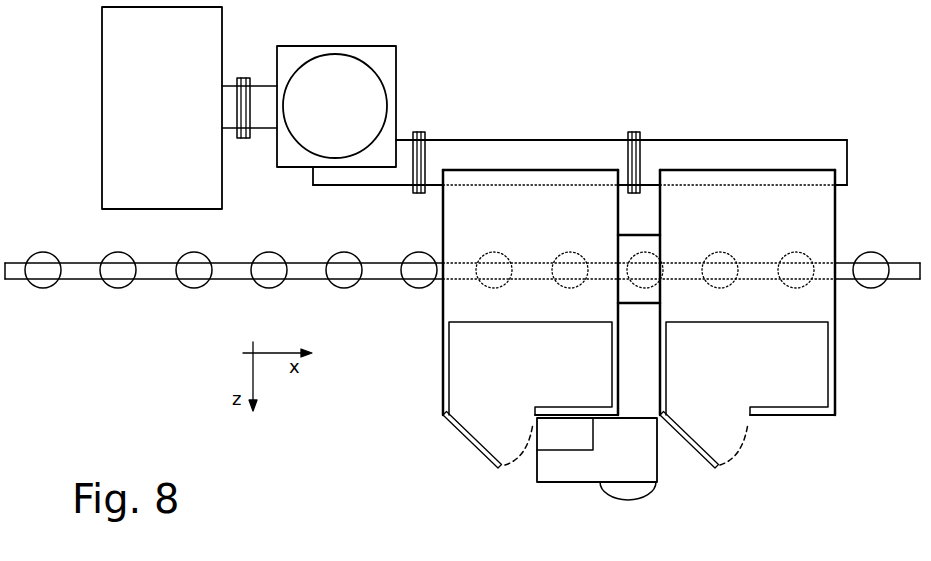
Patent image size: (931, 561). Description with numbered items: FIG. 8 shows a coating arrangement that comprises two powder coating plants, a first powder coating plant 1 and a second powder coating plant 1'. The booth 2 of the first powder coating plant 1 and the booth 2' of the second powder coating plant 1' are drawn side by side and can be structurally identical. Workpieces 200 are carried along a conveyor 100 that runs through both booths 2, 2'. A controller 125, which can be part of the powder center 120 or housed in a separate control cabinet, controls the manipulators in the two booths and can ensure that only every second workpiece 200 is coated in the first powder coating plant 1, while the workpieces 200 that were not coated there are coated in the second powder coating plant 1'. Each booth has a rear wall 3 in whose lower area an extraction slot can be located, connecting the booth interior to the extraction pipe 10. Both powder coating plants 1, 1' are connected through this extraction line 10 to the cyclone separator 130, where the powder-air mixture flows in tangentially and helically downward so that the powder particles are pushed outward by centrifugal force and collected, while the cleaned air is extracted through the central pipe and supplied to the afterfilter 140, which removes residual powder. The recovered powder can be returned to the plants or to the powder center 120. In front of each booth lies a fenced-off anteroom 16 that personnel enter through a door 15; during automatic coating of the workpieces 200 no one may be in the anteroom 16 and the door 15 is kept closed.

The first powder coating plant 1 is at (502, 292).
The second powder coating plant 1' is at (762, 292).
The booth 2 is at (530, 302).
The booth 2' is at (747, 302).
The rear wall 3 is at (543, 170).
The extraction pipe 10 is at (603, 140).
The door 15 is at (482, 458).
The anteroom 16 is at (477, 410).
The conveyor 100 is at (85, 280).
The powder center 120 is at (582, 485).
The controller 125 is at (570, 452).
The cyclone separator 130 is at (397, 67).
The afterfilter 140 is at (223, 30).
The workpieces 200 is at (118, 252).